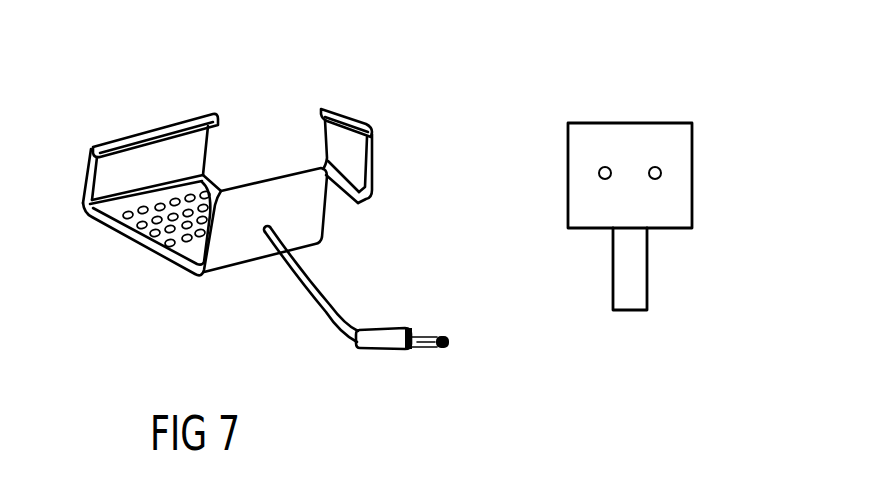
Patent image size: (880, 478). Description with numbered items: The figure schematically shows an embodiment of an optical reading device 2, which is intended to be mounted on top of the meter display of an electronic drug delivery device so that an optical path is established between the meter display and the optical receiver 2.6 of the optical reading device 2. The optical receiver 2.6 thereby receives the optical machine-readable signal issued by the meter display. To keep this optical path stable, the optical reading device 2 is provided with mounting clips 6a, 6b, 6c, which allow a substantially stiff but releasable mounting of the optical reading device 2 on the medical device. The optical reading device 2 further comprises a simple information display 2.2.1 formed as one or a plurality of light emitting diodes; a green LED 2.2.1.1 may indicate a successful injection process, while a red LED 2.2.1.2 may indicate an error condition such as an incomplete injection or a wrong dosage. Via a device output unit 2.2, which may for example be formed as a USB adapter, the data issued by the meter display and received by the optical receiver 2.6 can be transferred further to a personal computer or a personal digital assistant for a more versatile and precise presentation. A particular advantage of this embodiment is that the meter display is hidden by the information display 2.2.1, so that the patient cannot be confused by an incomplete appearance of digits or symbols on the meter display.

The optical reading device 2 is at (252, 129).
The device output unit 2.2 is at (397, 333).
The information display 2.2.1 is at (693, 185).
The green LED 2.2.1.1 is at (603, 165).
The red LED 2.2.1.2 is at (656, 165).
The optical receiver 2.6 is at (108, 232).
The mounting clip 6a is at (235, 255).
The mounting clip 6b is at (354, 126).
The mounting clip 6c is at (135, 129).